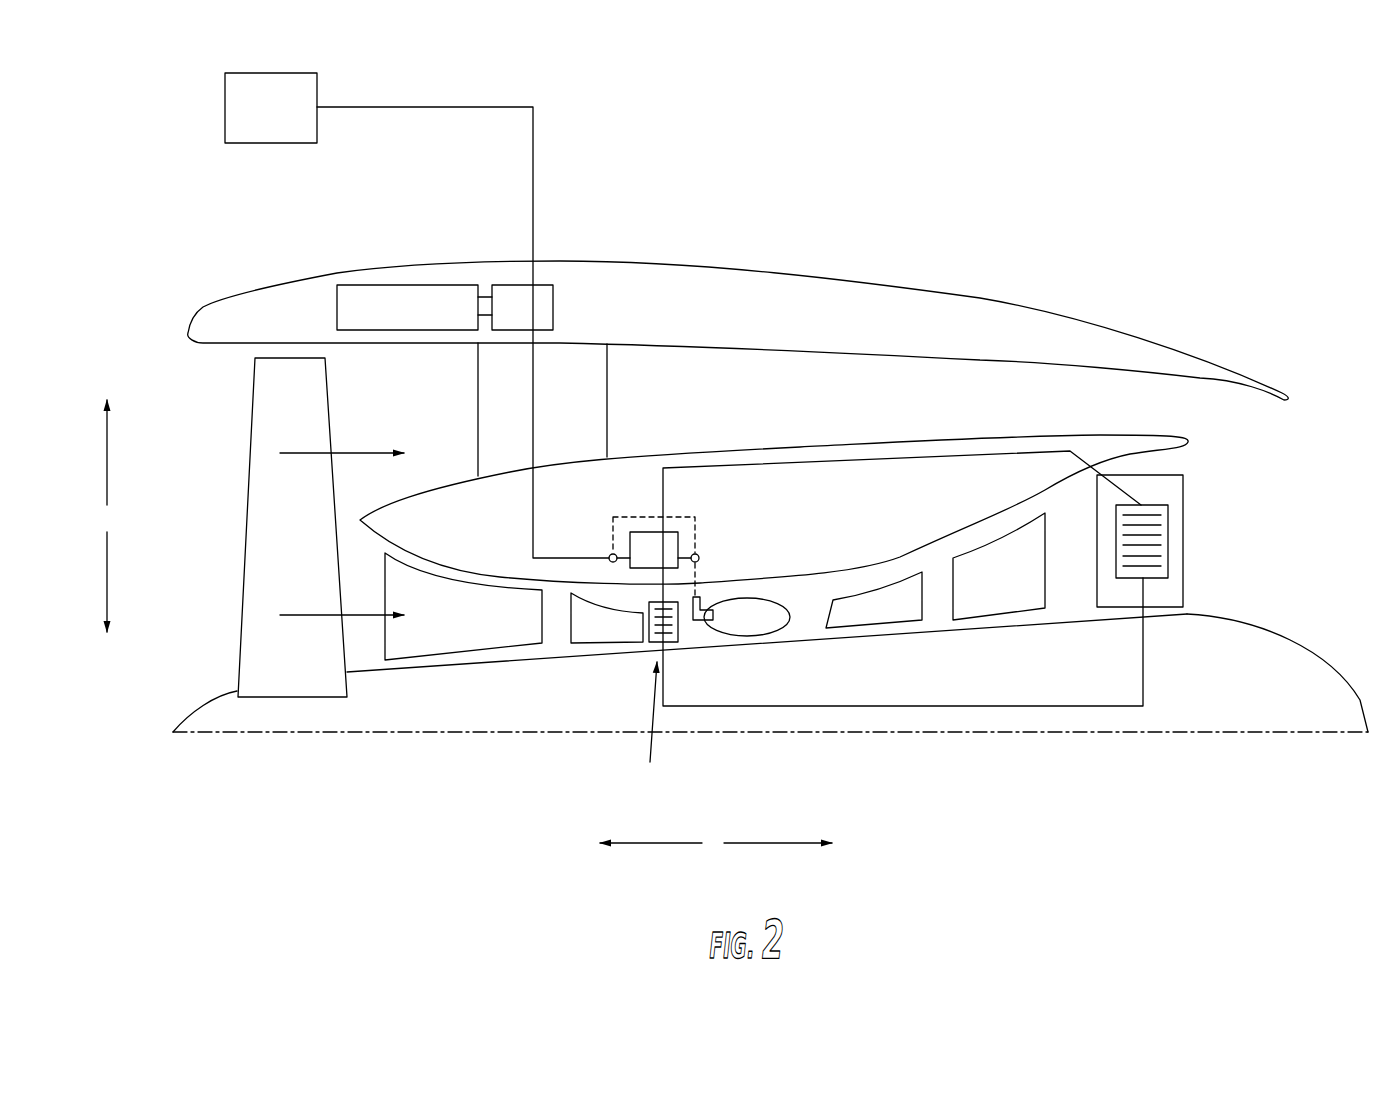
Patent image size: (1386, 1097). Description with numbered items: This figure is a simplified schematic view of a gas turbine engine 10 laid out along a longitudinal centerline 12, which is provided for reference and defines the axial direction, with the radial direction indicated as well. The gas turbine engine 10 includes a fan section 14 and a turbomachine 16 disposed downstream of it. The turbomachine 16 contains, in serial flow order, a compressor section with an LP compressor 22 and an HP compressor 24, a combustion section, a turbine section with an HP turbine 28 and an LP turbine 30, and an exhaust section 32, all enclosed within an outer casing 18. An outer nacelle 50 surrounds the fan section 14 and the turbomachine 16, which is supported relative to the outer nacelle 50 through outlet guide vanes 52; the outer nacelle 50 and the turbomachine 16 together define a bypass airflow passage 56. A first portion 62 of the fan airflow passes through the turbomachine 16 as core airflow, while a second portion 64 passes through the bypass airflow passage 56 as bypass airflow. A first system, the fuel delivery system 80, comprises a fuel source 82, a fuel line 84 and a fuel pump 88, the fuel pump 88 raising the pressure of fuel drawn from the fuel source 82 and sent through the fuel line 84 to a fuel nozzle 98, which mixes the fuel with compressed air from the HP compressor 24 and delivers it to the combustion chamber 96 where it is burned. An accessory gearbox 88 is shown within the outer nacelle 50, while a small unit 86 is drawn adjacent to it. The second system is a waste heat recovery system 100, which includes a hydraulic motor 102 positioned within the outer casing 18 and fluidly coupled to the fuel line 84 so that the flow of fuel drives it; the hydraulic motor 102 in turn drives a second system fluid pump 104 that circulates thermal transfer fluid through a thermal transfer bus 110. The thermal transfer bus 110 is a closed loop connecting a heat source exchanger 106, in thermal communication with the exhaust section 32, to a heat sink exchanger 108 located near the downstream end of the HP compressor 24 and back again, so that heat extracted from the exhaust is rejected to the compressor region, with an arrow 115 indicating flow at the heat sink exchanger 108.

The gas turbine engine 10 is at (924, 124).
The longitudinal centerline 12 is at (1265, 734).
The fan section 14 is at (231, 428).
The turbomachine 16 is at (694, 420).
The outer casing 18 is at (827, 442).
The LP compressor 22 is at (450, 621).
The HP compressor 24 is at (612, 628).
The HP turbine 28 is at (878, 612).
The LP turbine 30 is at (987, 589).
The exhaust section 32 is at (1181, 590).
The outer nacelle 50 is at (643, 292).
The outlet guide vanes 52 is at (476, 395).
The bypass airflow passage 56 is at (770, 396).
The first portion of airflow 62 is at (308, 613).
The second portion of airflow 64 is at (365, 451).
The fuel delivery system 80 is at (554, 80).
The fuel source 82 is at (257, 119).
The fuel line 84 is at (536, 162).
The pump 86 is at (553, 308).
The fuel pump 88 is at (415, 285).
The combustion chamber 96 is at (754, 612).
The fuel nozzle 98 is at (706, 604).
The waste heat recovery system 100 is at (909, 446).
The hydraulic motor 102 is at (667, 530).
The second system fluid pump 104 is at (654, 557).
The heat source exchanger 106 is at (1170, 533).
The heat sink exchanger 108 is at (652, 648).
The thermal transfer bus 110 is at (994, 452).
The flow arrow 115 is at (644, 727).